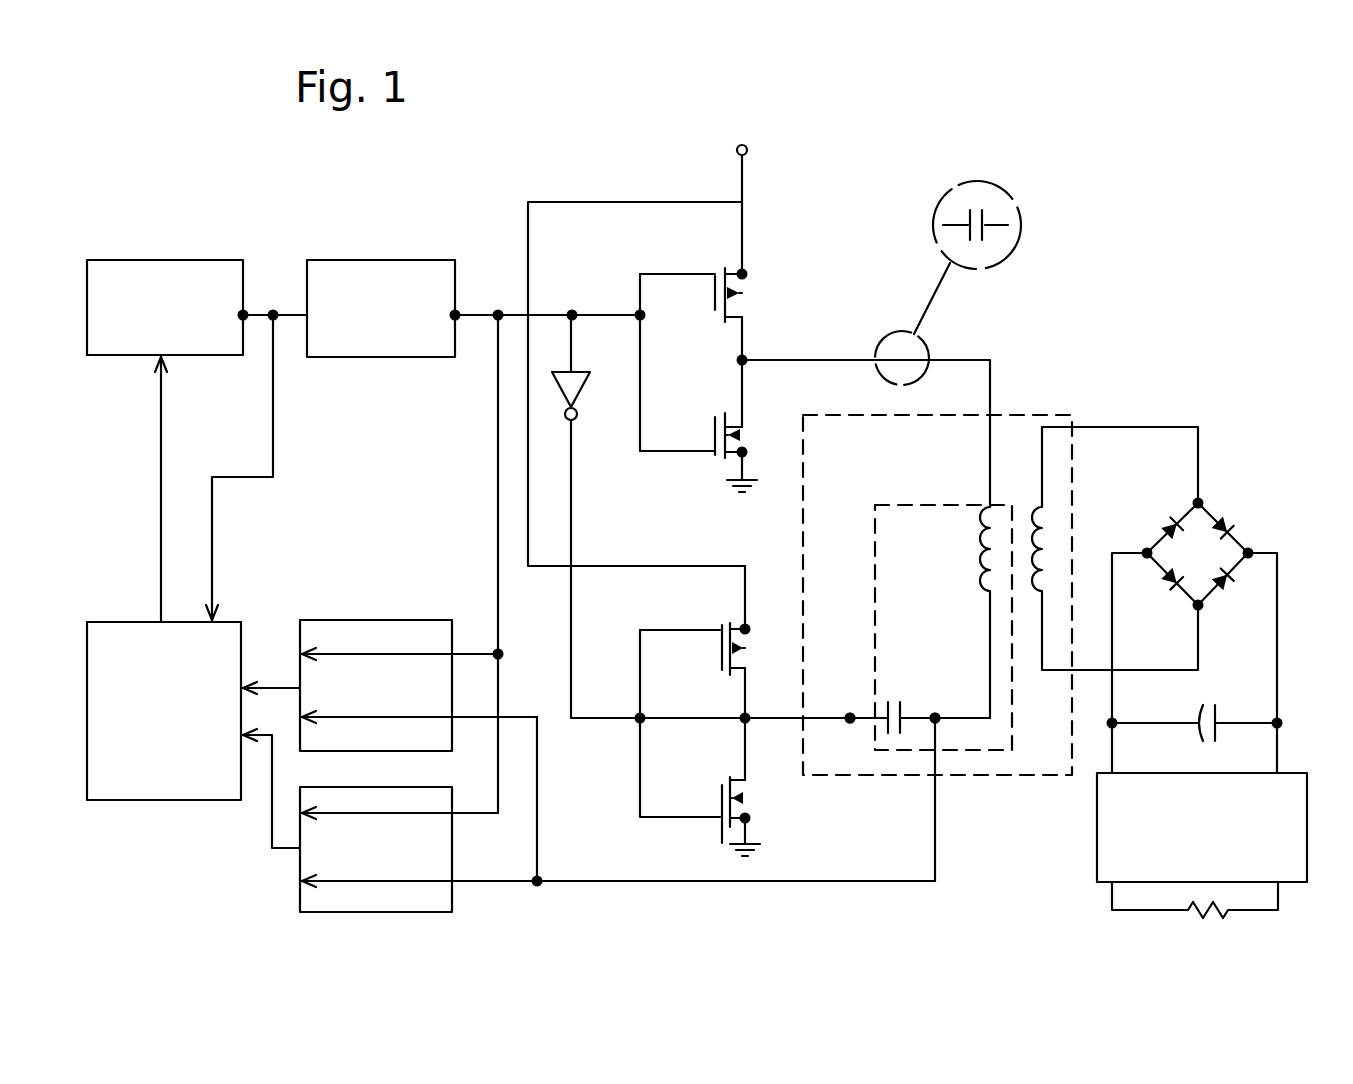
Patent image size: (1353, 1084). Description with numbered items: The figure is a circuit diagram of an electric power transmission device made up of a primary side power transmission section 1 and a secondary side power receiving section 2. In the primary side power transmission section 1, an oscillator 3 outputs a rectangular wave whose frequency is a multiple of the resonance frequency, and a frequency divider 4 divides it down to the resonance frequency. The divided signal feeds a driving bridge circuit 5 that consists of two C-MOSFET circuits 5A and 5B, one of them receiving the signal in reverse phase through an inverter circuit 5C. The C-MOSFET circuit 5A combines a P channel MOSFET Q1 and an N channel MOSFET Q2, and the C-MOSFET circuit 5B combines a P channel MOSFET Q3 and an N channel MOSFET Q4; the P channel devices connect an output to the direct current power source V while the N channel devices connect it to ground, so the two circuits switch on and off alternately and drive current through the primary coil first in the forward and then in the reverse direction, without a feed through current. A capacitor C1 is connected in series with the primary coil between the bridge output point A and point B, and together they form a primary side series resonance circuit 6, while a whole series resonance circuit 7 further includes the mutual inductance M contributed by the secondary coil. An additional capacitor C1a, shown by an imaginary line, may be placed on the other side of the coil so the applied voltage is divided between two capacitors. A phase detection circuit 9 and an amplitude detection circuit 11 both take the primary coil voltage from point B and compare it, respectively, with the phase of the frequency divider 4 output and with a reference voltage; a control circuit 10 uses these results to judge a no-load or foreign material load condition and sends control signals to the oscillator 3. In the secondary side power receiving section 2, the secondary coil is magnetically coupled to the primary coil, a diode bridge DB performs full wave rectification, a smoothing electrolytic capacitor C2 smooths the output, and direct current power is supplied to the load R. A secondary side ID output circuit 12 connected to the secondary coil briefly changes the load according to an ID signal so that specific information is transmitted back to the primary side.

The primary side power transmission section 1 is at (252, 220).
The secondary side power receiving section 2 is at (1241, 424).
The oscillator 3 is at (156, 261).
The frequency divider 4 is at (372, 260).
The driving bridge circuit 5 is at (606, 188).
The C-MOSFET circuit 5A is at (773, 318).
The C-MOSFET circuit 5B is at (767, 612).
The inverter circuit 5C is at (581, 390).
The primary side series resonance circuit 6 is at (960, 504).
The whole series resonance circuit 7 is at (1012, 412).
The phase detection circuit 9 is at (370, 620).
The control circuit 10 is at (166, 801).
The amplitude detection circuit 11 is at (300, 896).
The secondary side ID output circuit 12 is at (1097, 865).
The P channel MOSFET Q1 is at (718, 262).
The N channel MOSFET Q2 is at (718, 462).
The P channel MOSFET Q3 is at (722, 612).
The N channel MOSFET Q4 is at (720, 835).
The capacitor C1 is at (893, 700).
The capacitor C1a is at (990, 220).
The smoothing electrolytic capacitor C2 is at (1226, 713).
The diode bridge DB is at (1256, 532).
The load R is at (1190, 915).
The mutual inductance M is at (1036, 494).
The direct current power source V is at (741, 133).
The node A is at (848, 705).
The point B is at (931, 705).